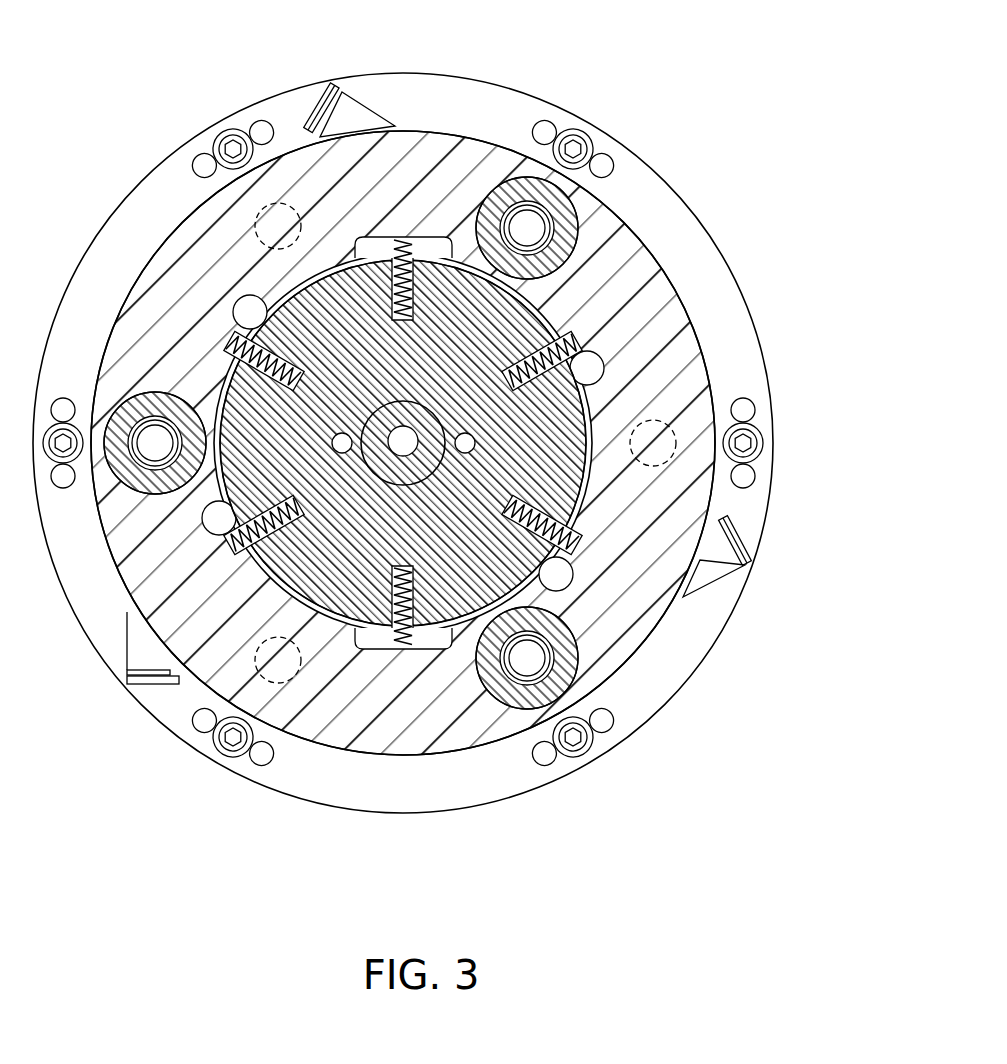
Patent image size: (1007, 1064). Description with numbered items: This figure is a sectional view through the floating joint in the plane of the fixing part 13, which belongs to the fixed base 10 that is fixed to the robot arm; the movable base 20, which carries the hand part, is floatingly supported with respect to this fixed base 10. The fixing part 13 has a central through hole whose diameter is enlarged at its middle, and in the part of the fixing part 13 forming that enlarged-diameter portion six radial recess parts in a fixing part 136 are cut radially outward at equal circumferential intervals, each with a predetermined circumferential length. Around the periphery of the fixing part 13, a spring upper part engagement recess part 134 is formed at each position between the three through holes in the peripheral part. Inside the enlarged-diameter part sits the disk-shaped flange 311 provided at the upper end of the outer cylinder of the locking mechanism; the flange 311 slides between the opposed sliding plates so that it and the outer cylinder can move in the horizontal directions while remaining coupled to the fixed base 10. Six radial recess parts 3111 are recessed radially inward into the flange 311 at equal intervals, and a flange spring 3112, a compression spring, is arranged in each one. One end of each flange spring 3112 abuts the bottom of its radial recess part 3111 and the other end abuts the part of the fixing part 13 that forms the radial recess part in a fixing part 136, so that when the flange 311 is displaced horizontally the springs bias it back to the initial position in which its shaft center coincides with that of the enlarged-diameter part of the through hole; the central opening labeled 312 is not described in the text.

The fixed base 10 is at (668, 262).
The movable base 20 is at (735, 268).
The fixing part 13 is at (718, 498).
The spring upper part engagement recess part 134 is at (262, 222).
The radial recess part in a fixing part 136 is at (595, 352).
The flange 311 is at (600, 505).
The radial recess part 3111 is at (565, 545).
The flange spring 3112 is at (532, 516).
The central hub hole 312 is at (392, 432).